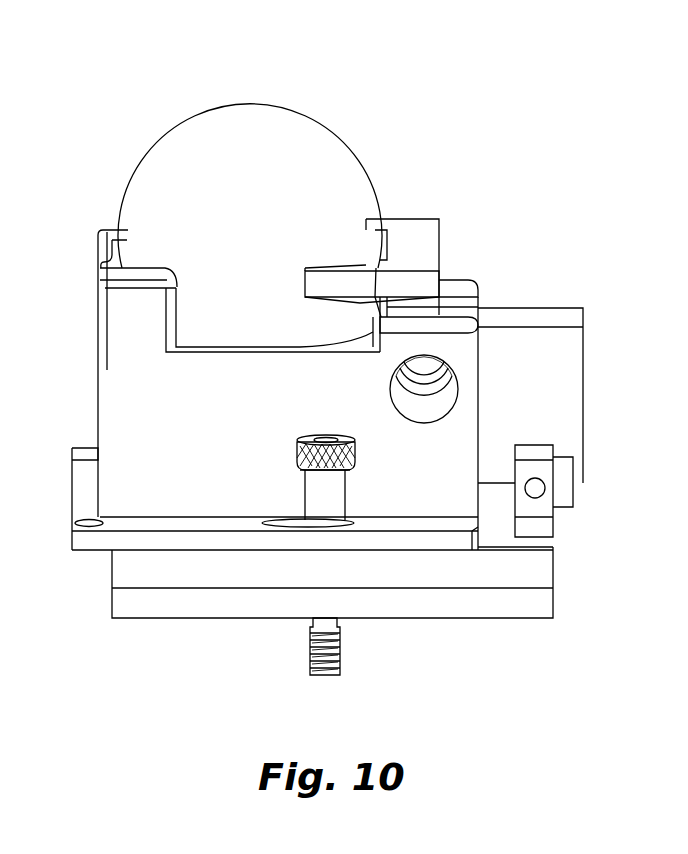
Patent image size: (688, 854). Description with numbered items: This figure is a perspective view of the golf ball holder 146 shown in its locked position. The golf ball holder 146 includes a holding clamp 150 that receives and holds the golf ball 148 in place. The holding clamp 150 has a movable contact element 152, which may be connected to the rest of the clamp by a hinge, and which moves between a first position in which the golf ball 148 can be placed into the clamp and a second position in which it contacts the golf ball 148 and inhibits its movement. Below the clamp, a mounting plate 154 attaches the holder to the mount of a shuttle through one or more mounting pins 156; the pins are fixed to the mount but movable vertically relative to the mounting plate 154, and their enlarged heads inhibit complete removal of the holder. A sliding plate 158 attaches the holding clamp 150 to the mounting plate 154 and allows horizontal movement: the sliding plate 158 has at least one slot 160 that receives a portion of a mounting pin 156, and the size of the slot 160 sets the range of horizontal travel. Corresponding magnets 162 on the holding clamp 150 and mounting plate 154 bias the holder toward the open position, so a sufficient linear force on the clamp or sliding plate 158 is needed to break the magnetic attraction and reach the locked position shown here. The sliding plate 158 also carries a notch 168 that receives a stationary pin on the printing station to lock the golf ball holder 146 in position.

The golf ball holder 146 is at (505, 112).
The golf ball 148 is at (263, 150).
The holding clamp 150 is at (383, 177).
The movable contact element 152 is at (431, 245).
The mounting plate 154 is at (542, 607).
The mounting pin 156 is at (340, 662).
The sliding plate 158 is at (193, 550).
The slot 160 is at (291, 528).
The magnet 162 is at (567, 478).
The notch 168 is at (72, 460).